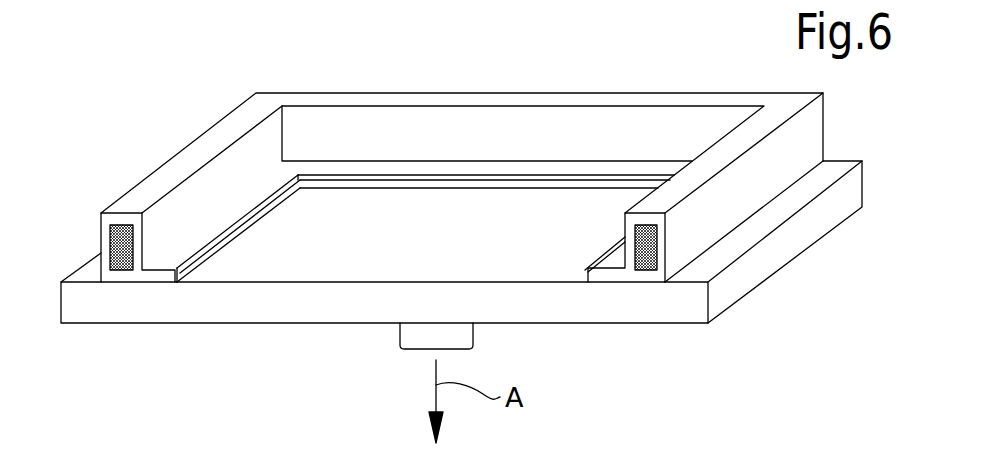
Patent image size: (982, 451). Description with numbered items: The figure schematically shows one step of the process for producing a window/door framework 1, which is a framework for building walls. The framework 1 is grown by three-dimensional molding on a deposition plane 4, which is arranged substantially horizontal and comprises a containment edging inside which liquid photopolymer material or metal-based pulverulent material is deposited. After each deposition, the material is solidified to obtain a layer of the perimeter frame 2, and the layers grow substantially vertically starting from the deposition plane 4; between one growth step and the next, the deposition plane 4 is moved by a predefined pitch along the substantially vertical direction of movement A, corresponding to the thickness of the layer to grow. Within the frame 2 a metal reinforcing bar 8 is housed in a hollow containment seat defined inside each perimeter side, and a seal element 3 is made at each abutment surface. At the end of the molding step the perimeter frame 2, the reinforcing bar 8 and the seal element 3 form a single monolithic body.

The window/door framework 1 is at (138, 46).
The perimeter frame 2 is at (705, 167).
The seal element 3 is at (584, 270).
The deposition plane 4 is at (388, 317).
The metal reinforcing bar 8 is at (648, 253).